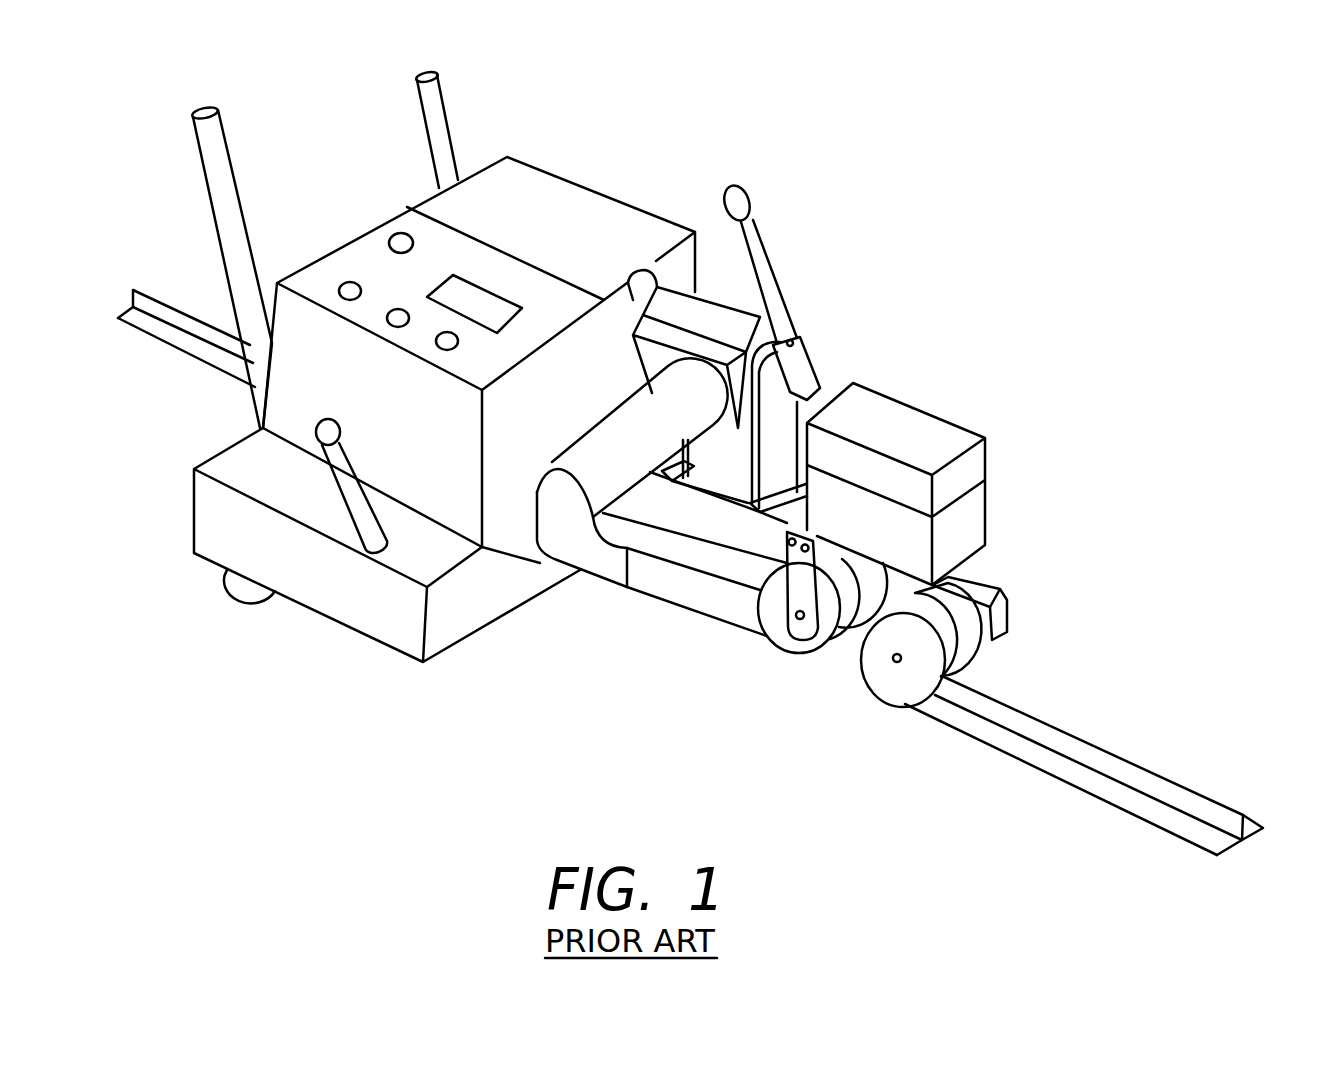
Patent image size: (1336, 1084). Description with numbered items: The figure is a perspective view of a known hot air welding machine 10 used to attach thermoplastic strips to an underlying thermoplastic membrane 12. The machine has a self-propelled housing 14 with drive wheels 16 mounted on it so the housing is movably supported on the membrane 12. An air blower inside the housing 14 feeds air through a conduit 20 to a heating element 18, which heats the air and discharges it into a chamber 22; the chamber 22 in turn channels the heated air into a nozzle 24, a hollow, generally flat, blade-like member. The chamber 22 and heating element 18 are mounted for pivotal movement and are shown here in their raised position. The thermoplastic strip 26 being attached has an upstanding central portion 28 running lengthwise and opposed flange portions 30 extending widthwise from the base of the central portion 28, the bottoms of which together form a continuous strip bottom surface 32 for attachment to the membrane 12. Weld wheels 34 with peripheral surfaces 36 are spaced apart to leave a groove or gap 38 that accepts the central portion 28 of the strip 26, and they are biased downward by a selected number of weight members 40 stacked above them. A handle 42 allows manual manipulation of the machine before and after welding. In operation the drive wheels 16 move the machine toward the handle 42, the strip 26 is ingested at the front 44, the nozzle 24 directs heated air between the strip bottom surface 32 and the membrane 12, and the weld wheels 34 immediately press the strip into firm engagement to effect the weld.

The hot air welding machine 10 is at (886, 224).
The thermoplastic membrane 12 is at (860, 794).
The self-propelled housing 14 is at (570, 180).
The drive wheels 16 is at (251, 597).
The heating element 18 is at (700, 290).
The conduit 20 is at (637, 267).
The chamber 22 is at (613, 423).
The nozzle 24 is at (607, 567).
The thermoplastic strip 26 is at (722, 582).
The central portion 28 is at (1083, 744).
The flange portions 30 is at (1110, 790).
The strip bottom surface 32 is at (1253, 847).
The weld wheels 34 is at (777, 627).
The peripheral surfaces 36 is at (877, 572).
The groove or gap 38 is at (848, 575).
The weight members 40 is at (973, 473).
The handle 42 is at (238, 190).
The front 44 is at (186, 214).